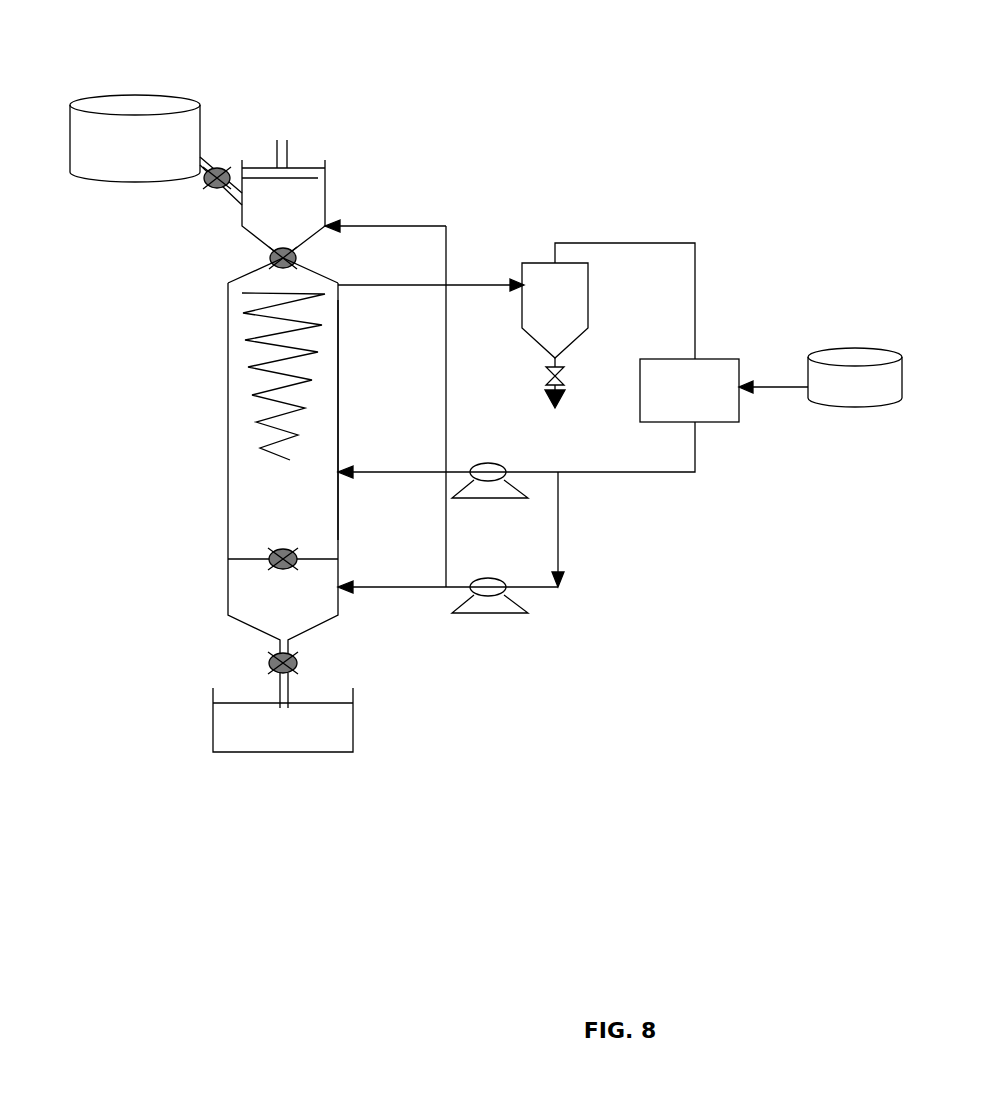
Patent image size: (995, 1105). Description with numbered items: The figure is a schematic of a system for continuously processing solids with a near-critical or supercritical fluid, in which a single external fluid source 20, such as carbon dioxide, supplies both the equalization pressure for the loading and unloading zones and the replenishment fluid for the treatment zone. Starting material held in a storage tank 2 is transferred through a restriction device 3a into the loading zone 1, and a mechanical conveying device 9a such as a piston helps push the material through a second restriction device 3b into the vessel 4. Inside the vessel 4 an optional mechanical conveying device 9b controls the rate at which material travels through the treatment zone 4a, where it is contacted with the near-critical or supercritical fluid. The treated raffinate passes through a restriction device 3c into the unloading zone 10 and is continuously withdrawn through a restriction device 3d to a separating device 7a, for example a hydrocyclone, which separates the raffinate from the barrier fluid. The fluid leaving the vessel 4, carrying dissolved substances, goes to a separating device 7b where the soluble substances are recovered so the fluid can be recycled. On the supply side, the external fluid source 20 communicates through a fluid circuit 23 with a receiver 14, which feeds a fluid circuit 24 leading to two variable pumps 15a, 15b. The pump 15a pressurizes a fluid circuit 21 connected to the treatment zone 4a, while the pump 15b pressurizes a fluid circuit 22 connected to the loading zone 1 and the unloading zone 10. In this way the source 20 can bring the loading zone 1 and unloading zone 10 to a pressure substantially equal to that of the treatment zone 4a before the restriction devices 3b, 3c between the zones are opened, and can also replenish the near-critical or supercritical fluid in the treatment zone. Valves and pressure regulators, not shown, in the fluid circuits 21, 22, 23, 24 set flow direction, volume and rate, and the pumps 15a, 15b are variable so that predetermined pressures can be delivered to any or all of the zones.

The loading zone 1 is at (335, 190).
The storage tank 2 is at (156, 122).
The restriction device 3a is at (226, 164).
The restriction device 3b is at (262, 263).
The restriction device 3c is at (297, 568).
The restriction device 3d is at (297, 658).
The vessel 4 is at (218, 430).
The treatment zone 4a is at (320, 392).
The separating device 7a is at (212, 682).
The separating device 7b is at (575, 348).
The mechanical conveying device 9a is at (300, 158).
The mechanical conveying device 9b is at (247, 353).
The unloading zone 10 is at (215, 555).
The receiver 14 is at (647, 332).
The pump 15a is at (490, 465).
The pump 15b is at (490, 580).
The external fluid source 20 is at (855, 377).
The fluid circuit 21 is at (377, 460).
The fluid circuit 22 is at (557, 587).
The fluid circuit 23 is at (758, 383).
The fluid circuit 24 is at (695, 457).